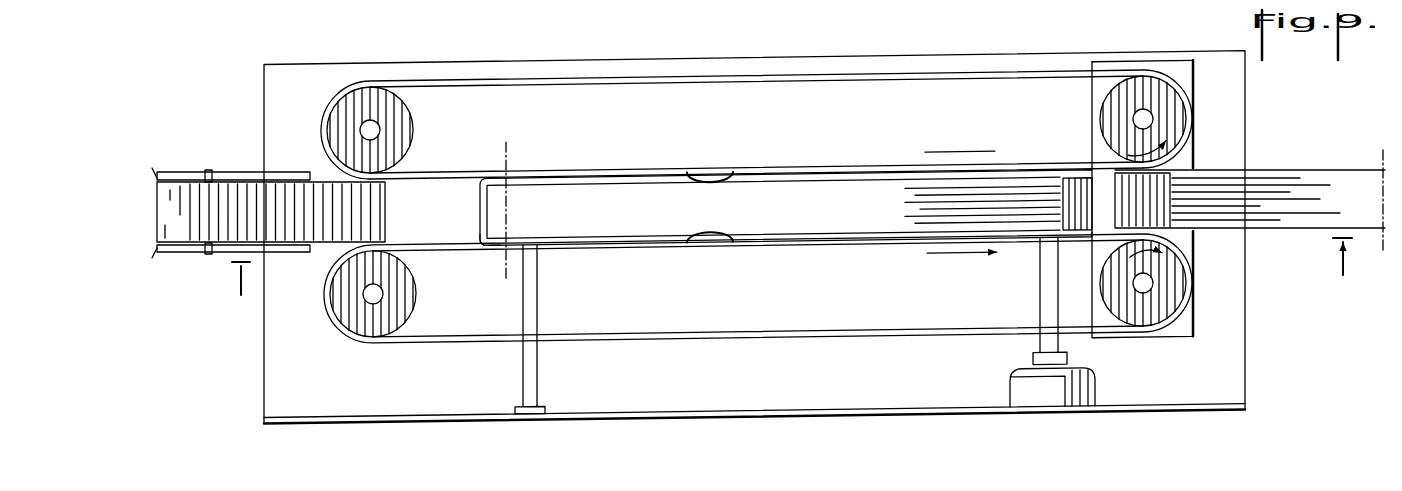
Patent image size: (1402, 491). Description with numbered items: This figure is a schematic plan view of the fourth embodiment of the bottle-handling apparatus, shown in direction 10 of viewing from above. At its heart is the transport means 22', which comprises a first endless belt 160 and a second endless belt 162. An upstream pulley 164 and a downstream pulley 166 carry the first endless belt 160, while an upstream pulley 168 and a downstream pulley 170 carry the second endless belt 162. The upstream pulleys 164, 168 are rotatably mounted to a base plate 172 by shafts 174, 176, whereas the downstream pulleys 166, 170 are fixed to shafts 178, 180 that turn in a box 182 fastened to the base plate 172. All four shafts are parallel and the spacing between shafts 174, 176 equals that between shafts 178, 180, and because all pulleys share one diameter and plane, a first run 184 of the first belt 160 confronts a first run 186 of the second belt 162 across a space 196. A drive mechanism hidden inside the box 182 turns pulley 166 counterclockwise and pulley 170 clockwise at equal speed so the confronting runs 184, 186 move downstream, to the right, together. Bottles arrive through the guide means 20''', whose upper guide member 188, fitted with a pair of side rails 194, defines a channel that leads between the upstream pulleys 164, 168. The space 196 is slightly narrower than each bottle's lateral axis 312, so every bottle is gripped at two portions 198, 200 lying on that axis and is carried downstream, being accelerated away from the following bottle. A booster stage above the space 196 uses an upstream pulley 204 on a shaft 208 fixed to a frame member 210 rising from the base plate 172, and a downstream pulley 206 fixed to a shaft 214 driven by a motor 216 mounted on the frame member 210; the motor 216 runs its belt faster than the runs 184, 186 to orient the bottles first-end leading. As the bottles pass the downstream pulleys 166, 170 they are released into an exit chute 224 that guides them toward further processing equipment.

The articles / direction of travel 10 is at (792, 275).
The guide means 20''' is at (183, 189).
The transport means 22' is at (1195, 198).
The first endless belt 160 is at (920, 76).
The second endless belt 162 is at (873, 349).
The upstream pulley 164 is at (380, 90).
The downstream pulley 166 is at (1163, 101).
The upstream pulley 168 is at (413, 309).
The downstream pulley 170 is at (1170, 306).
The base plate 172 is at (263, 88).
The shaft 174 is at (360, 129).
The shaft 176 is at (365, 303).
The shaft 178 is at (1153, 130).
The shaft 180 is at (1153, 294).
The box 182 is at (1170, 79).
The first run 184 is at (818, 159).
The first run 186 is at (810, 253).
The guide member 188 is at (194, 230).
The side rails 194 is at (193, 173).
The space 196 is at (428, 191).
The engaged portion 198 is at (506, 178).
The engaged portion 200 is at (510, 246).
The upstream pulley 204 is at (565, 227).
The downstream pulley 206 is at (1083, 182).
The shaft 208 is at (540, 312).
The frame member 210 is at (604, 417).
The shaft 214 is at (1048, 300).
The motor 216 is at (1010, 395).
The exit chute 224 is at (1352, 173).
The lateral axis 312 is at (512, 145).